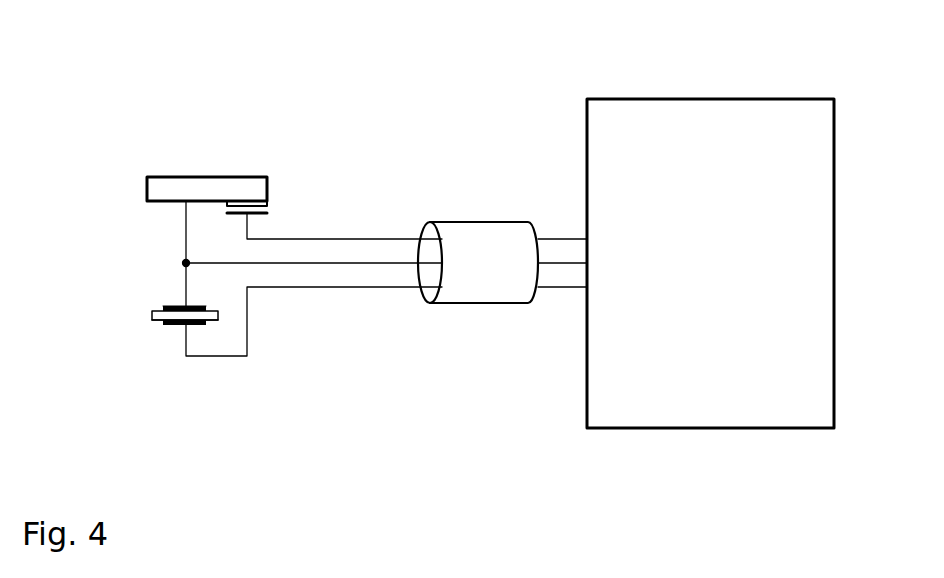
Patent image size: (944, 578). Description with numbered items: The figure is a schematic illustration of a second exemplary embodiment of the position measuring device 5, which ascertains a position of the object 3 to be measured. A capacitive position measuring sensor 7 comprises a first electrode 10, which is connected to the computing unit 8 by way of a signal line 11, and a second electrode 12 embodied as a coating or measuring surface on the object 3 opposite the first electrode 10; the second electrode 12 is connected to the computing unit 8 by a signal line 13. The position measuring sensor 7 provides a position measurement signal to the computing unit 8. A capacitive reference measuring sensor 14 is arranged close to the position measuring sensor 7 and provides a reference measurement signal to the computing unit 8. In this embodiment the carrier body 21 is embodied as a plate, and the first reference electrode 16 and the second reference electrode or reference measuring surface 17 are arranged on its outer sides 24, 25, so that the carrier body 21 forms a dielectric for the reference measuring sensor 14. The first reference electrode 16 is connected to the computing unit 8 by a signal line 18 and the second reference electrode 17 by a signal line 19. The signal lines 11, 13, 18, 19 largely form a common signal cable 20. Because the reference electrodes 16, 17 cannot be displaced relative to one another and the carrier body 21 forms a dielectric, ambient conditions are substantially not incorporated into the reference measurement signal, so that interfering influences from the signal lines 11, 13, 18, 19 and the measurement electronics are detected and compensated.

The object to be measured 3 is at (147, 188).
The position measuring device 5 is at (504, 108).
The capacitive position measuring sensor 7 is at (228, 125).
The computing unit 8 is at (702, 88).
The first electrode 10 is at (227, 213).
The signal line 11 is at (314, 239).
The second electrode 12 is at (240, 203).
The signal line 13 is at (183, 235).
The capacitive reference measuring sensor 14 is at (159, 382).
The first reference electrode 16 is at (177, 326).
The second reference electrode 17 is at (177, 307).
The signal line 18 is at (314, 287).
The signal line 19 is at (183, 271).
The common signal cable 20 is at (457, 212).
The carrier body 21 is at (153, 336).
The outer side 24 is at (207, 325).
The outer side 25 is at (213, 306).